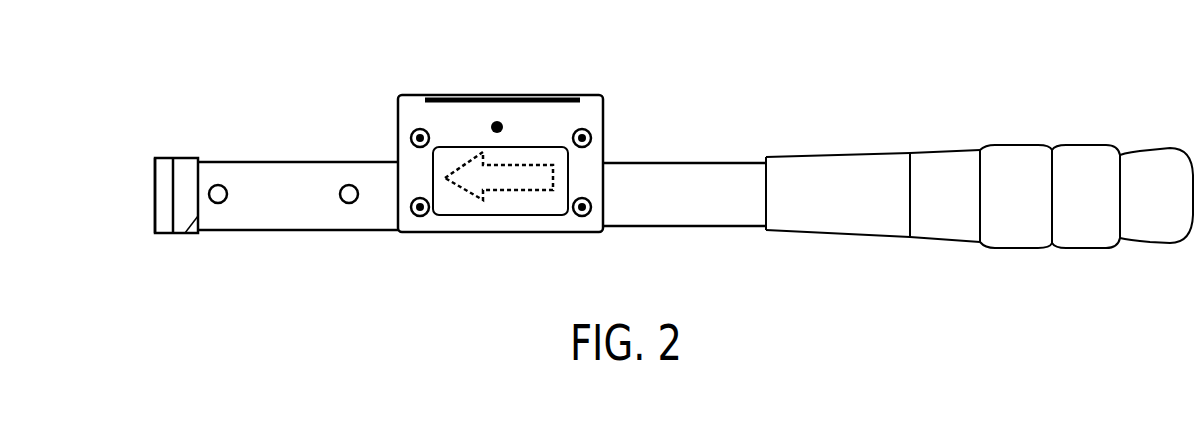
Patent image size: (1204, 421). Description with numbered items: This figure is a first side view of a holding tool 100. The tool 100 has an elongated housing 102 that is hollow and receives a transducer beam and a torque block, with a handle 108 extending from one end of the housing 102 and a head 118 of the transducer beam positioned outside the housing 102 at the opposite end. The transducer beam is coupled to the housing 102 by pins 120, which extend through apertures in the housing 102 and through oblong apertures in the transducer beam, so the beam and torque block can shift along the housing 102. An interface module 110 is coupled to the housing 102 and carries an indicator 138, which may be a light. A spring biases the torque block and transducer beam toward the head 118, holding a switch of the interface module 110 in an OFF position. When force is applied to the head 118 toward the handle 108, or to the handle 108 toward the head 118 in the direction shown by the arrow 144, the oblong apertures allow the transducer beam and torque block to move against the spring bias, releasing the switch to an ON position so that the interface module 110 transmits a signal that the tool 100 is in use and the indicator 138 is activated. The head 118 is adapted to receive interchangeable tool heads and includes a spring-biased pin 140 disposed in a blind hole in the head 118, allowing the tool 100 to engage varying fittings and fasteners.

The tool 100 is at (296, 106).
The housing 102 is at (615, 163).
The handle 108 is at (884, 165).
The interface module 110 is at (502, 233).
The head 118 is at (164, 228).
The pins 120 is at (218, 204).
The indicator 138 is at (497, 121).
The pin 140 is at (150, 196).
The arrow 144 is at (552, 212).